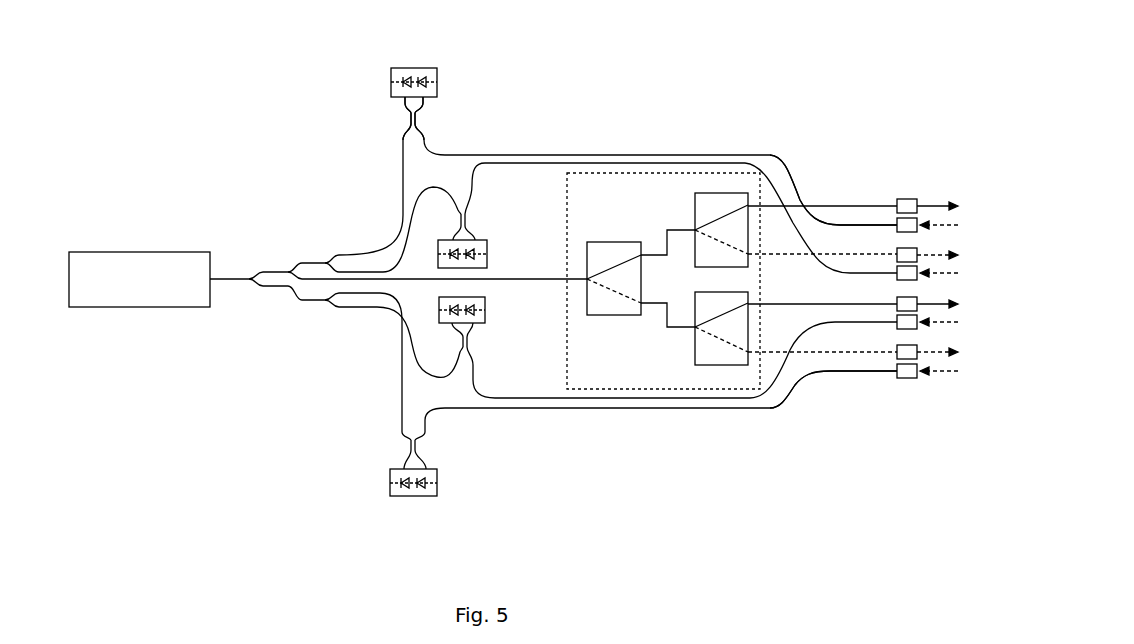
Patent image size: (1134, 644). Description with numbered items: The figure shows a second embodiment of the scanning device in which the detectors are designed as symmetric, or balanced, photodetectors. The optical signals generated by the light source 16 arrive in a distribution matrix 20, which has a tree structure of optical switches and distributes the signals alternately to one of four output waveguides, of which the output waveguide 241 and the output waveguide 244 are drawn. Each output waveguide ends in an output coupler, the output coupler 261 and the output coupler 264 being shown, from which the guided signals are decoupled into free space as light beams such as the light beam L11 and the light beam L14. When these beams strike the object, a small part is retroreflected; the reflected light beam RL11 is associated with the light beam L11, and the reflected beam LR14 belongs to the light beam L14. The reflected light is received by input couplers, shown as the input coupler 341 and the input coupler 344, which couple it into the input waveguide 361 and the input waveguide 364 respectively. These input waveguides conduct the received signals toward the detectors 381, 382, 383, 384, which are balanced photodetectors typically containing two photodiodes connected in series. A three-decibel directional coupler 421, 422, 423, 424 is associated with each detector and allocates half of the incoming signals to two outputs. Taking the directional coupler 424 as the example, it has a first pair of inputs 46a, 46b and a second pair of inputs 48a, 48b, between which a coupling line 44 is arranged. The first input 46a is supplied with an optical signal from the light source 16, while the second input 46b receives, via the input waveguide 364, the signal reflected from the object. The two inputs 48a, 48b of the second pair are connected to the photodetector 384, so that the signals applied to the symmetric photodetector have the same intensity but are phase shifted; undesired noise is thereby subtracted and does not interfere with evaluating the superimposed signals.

The light source 16 is at (140, 265).
The distribution matrix 20 is at (610, 173).
The coupling line 44 is at (409, 117).
The first input 46a is at (400, 124).
The second input 46b is at (430, 139).
The input 48a is at (400, 100).
The input 48b is at (430, 97).
The detector 381 is at (395, 496).
The detector 382 is at (485, 310).
The detector 383 is at (487, 255).
The detector 384 is at (396, 68).
The 3 dB directional coupler 421 is at (426, 445).
The 3 dB directional coupler 422 is at (477, 342).
The 3 dB directional coupler 423 is at (475, 220).
The 3 dB directional coupler 424 is at (437, 118).
The output waveguide 241 is at (825, 354).
The output waveguide 244 is at (838, 204).
The output coupler 261 is at (892, 356).
The output coupler 264 is at (905, 199).
The input coupler 341 is at (906, 379).
The input coupler 344 is at (897, 223).
The input waveguide 361 is at (795, 395).
The input waveguide 364 is at (788, 185).
The light beam L11 is at (926, 356).
The light beam L14 is at (945, 205).
The reflected light beam RL11 is at (942, 379).
The reflected light LR14 is at (935, 223).